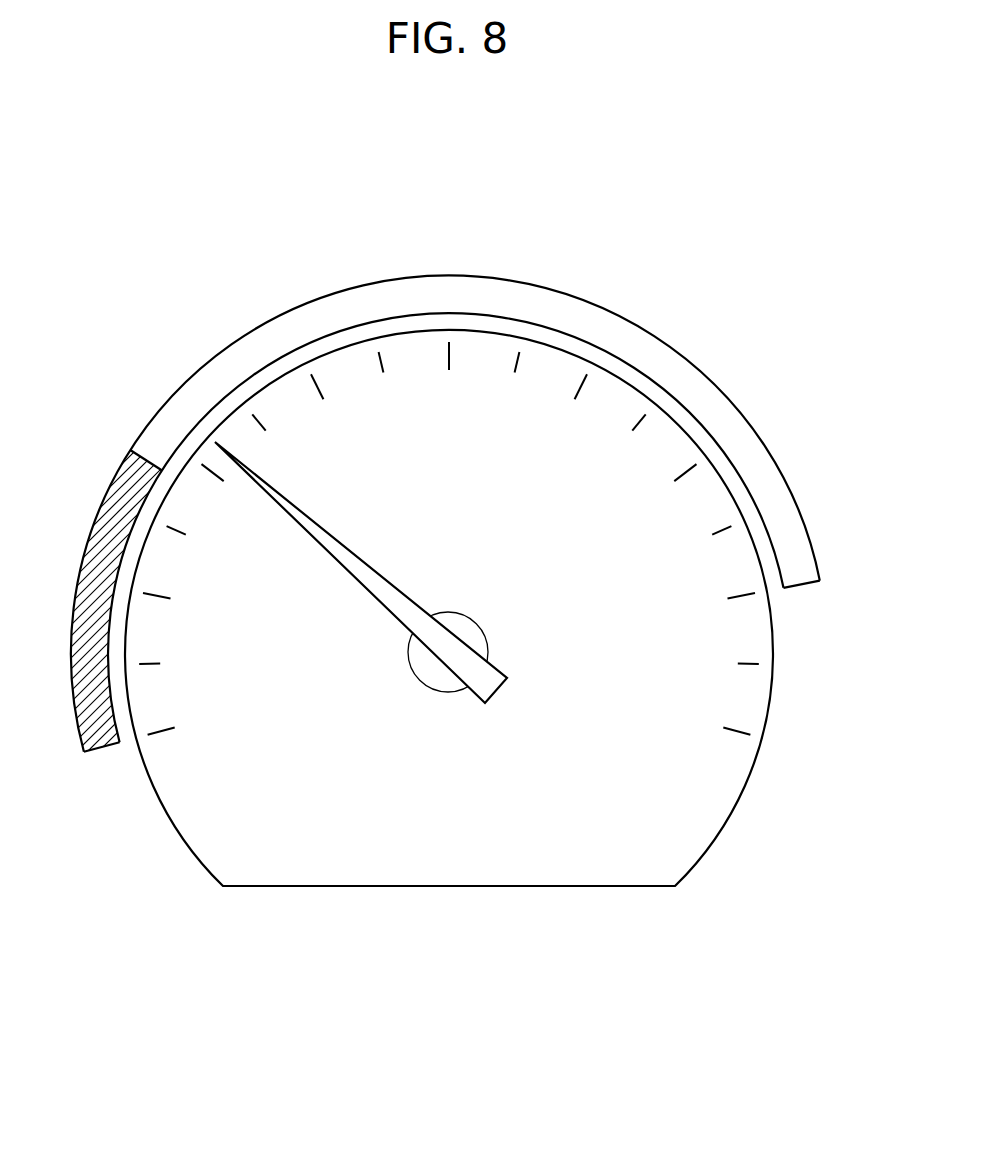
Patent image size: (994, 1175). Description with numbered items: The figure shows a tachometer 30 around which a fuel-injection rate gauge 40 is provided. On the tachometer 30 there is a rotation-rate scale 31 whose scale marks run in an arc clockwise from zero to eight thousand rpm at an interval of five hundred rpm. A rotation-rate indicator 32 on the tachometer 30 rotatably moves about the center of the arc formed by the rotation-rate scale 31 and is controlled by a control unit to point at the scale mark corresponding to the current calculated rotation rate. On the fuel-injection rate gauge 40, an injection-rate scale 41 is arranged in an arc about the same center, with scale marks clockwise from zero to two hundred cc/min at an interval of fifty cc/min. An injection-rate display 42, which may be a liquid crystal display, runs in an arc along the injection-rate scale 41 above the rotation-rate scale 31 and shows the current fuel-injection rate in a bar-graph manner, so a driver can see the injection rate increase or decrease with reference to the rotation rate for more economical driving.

The tachometer 30 is at (450, 887).
The rotation-rate scale 31 is at (445, 357).
The rotation-rate indicator 32 is at (481, 685).
The fuel-injection rate gauge 40 is at (757, 343).
The injection-rate scale 41 is at (690, 300).
The injection-rate display 42 is at (805, 589).